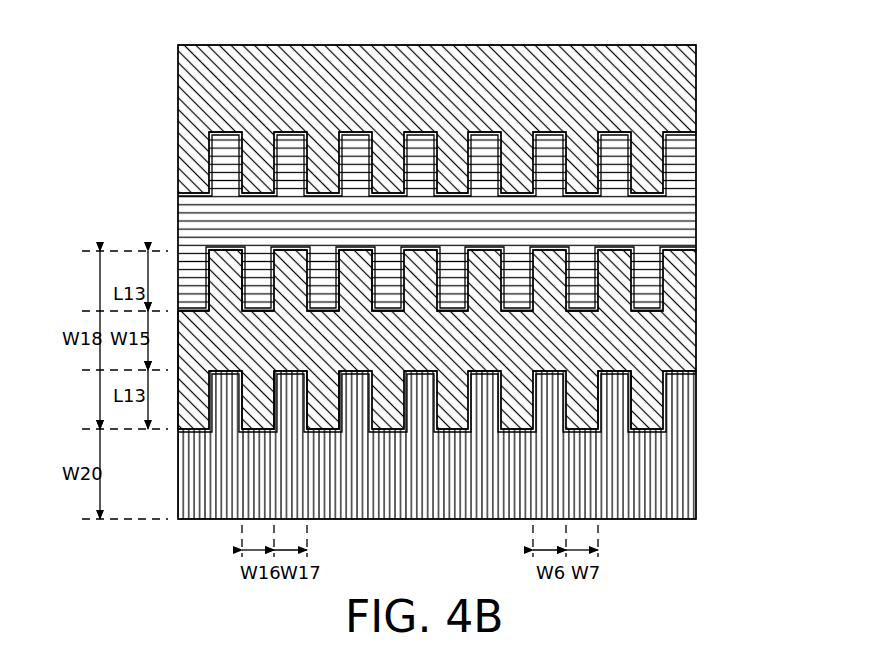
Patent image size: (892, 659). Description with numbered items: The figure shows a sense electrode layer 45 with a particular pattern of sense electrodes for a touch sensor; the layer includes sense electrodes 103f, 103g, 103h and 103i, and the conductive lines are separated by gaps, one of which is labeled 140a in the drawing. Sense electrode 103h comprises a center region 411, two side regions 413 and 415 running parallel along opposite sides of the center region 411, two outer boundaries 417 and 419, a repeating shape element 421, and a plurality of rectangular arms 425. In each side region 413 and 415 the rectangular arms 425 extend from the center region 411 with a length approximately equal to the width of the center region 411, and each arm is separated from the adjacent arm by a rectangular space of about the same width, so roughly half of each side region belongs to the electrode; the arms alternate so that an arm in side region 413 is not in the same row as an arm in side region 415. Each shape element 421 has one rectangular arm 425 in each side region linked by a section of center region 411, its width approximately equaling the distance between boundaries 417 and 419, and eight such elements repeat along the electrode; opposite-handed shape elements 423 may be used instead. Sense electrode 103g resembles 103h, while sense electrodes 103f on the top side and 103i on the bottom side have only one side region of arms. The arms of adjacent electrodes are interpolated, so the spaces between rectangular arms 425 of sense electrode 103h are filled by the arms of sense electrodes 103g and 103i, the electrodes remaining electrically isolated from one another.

The sense electrode layer 45 is at (146, 68).
The sense electrode 103f is at (673, 108).
The sense electrode 103g is at (683, 207).
The sense electrode 103h is at (686, 330).
The sense electrode 103i is at (683, 463).
The liner layer 140a is at (696, 133).
The center region 411 is at (220, 347).
The side region 413 is at (258, 410).
The side region 415 is at (225, 268).
The outer boundary 417 is at (292, 248).
The outer boundary 419 is at (267, 430).
The repeating shape element 421 is at (470, 353).
The shape element 423 is at (647, 422).
The rectangular arm 425 is at (358, 265).